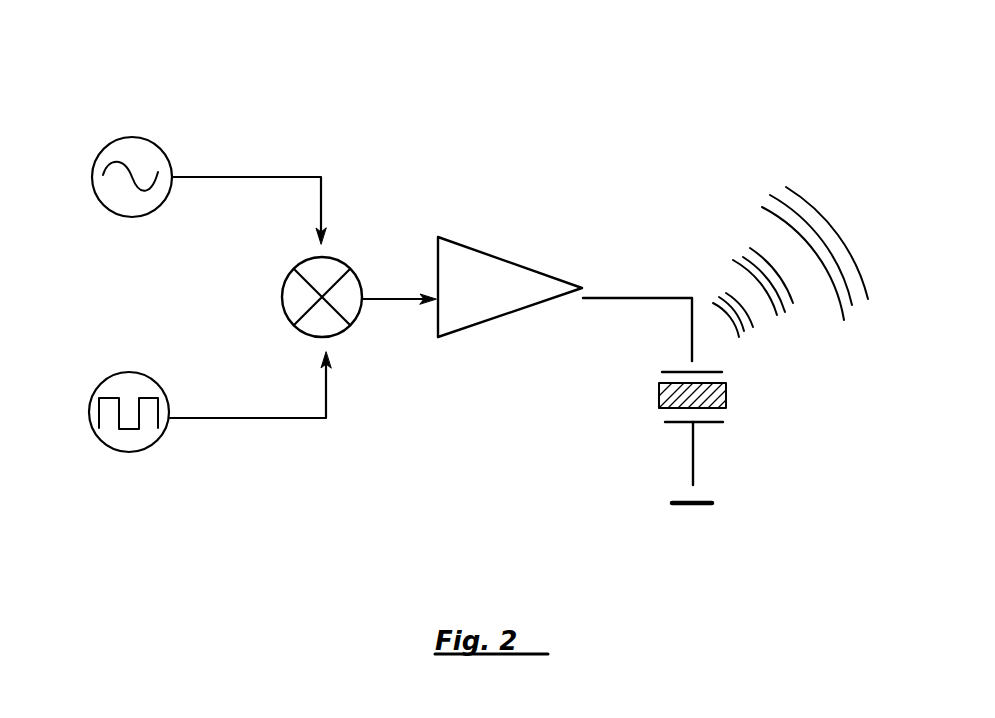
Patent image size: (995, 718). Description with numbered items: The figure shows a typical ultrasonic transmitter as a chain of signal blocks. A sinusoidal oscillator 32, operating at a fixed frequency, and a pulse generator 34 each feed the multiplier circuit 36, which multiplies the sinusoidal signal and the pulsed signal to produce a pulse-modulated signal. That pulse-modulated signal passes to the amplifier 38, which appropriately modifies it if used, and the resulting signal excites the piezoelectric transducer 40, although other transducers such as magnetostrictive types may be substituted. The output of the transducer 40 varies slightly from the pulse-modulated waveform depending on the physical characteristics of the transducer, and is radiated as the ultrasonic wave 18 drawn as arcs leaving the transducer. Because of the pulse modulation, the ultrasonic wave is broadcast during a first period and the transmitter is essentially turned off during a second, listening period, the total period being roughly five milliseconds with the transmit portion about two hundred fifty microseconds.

The ultrasonic transducer acoustic waves 18 is at (737, 263).
The sinusoidal oscillator 32 is at (147, 135).
The pulse generator 34 is at (123, 468).
The multiplier circuit 36 is at (348, 253).
The amplifier 38 is at (503, 253).
The piezoelectric transducer 40 is at (725, 393).